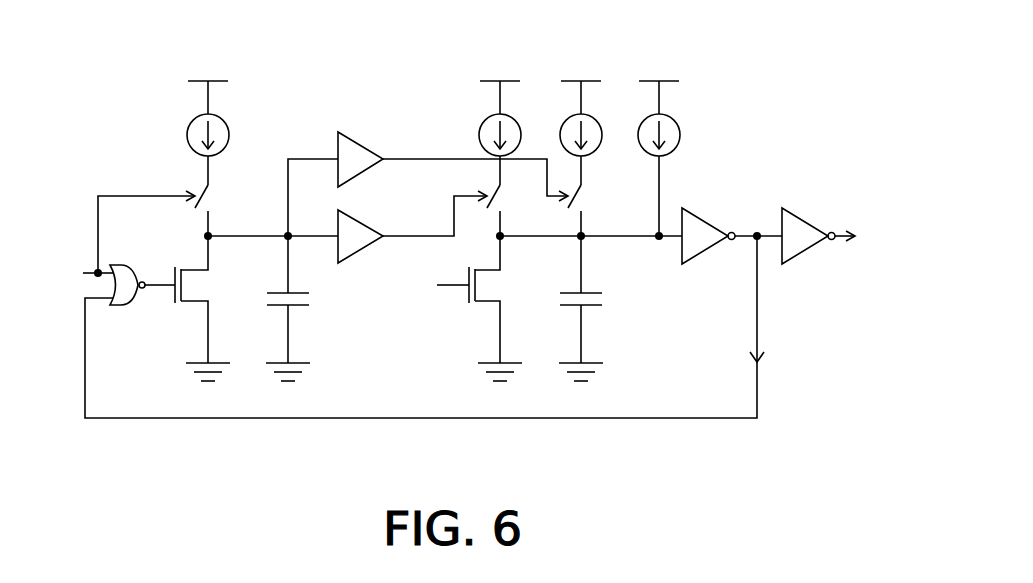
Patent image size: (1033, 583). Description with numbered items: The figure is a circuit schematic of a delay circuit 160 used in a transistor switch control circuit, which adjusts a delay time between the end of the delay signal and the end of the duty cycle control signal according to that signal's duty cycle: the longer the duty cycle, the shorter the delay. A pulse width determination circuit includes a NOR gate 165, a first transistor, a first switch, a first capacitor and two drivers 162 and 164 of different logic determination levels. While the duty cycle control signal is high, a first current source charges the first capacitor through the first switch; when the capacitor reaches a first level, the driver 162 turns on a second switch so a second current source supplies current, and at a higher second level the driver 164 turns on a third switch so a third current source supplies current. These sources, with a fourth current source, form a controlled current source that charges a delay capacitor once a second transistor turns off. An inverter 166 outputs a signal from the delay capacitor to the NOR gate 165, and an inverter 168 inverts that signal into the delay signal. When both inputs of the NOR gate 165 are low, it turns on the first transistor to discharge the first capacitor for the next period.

The delay circuit 160 is at (118, 43).
The driver 162 is at (357, 227).
The driver 164 is at (357, 150).
The NOR gate 165 is at (124, 266).
The inverter 166 is at (699, 224).
The inverter 168 is at (799, 224).